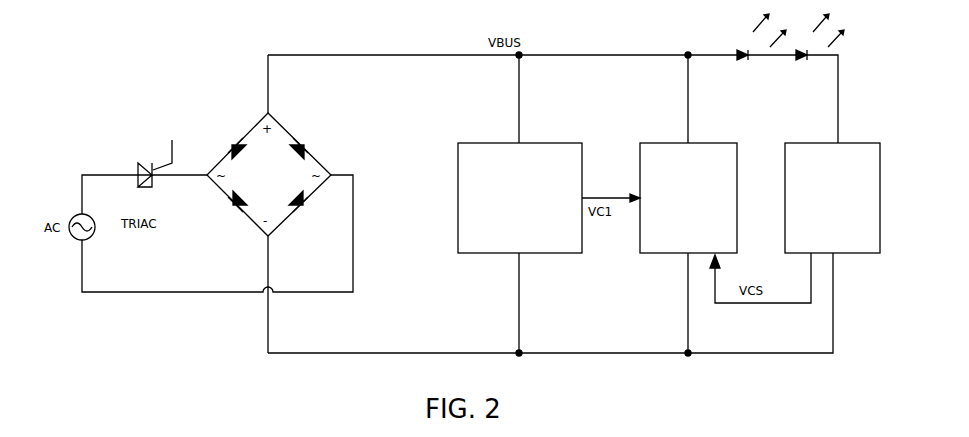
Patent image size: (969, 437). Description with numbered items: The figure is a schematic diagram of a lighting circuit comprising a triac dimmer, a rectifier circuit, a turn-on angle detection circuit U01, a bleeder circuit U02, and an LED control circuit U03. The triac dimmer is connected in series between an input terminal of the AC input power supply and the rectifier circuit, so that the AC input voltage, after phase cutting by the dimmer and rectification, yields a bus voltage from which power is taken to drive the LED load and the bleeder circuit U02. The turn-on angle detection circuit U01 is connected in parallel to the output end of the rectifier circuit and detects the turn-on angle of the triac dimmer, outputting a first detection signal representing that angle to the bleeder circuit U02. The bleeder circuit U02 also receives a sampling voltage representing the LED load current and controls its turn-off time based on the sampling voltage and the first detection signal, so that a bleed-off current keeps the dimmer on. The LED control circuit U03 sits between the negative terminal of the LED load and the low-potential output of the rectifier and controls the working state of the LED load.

The turn-on angle detection circuit U01 is at (570, 148).
The bleeder circuit U02 is at (715, 152).
The LED control circuit U03 is at (847, 153).